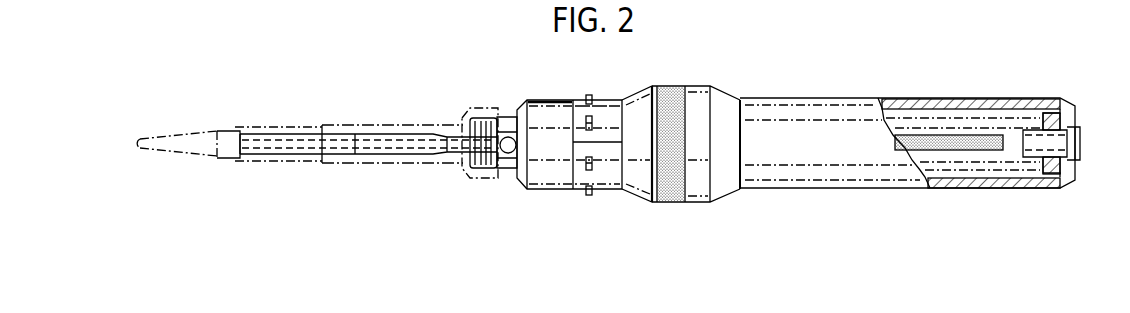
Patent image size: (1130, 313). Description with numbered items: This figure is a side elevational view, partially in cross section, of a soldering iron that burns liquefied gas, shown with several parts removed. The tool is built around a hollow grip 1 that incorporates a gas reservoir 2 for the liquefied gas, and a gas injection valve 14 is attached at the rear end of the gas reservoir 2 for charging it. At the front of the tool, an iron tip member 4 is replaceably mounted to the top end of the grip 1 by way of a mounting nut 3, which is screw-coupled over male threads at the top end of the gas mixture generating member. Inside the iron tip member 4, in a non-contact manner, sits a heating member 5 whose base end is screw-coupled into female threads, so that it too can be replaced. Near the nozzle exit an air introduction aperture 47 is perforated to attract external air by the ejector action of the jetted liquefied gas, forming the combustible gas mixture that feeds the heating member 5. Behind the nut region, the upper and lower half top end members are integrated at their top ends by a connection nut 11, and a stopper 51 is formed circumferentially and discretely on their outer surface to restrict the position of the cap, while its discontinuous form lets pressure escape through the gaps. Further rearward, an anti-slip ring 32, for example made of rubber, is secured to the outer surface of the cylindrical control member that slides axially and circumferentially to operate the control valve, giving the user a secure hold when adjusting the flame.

The grip 1 is at (847, 85).
The gas reservoir 2 is at (954, 170).
The mounting nut 3 is at (476, 172).
The iron tip member 4 is at (337, 121).
The heating member 5 is at (400, 127).
The connection nut 11 is at (553, 179).
The gas injection valve 14 is at (1076, 139).
The anti-slip ring 32 is at (677, 196).
The air introduction aperture 47 is at (506, 136).
The stopper 51 is at (592, 168).